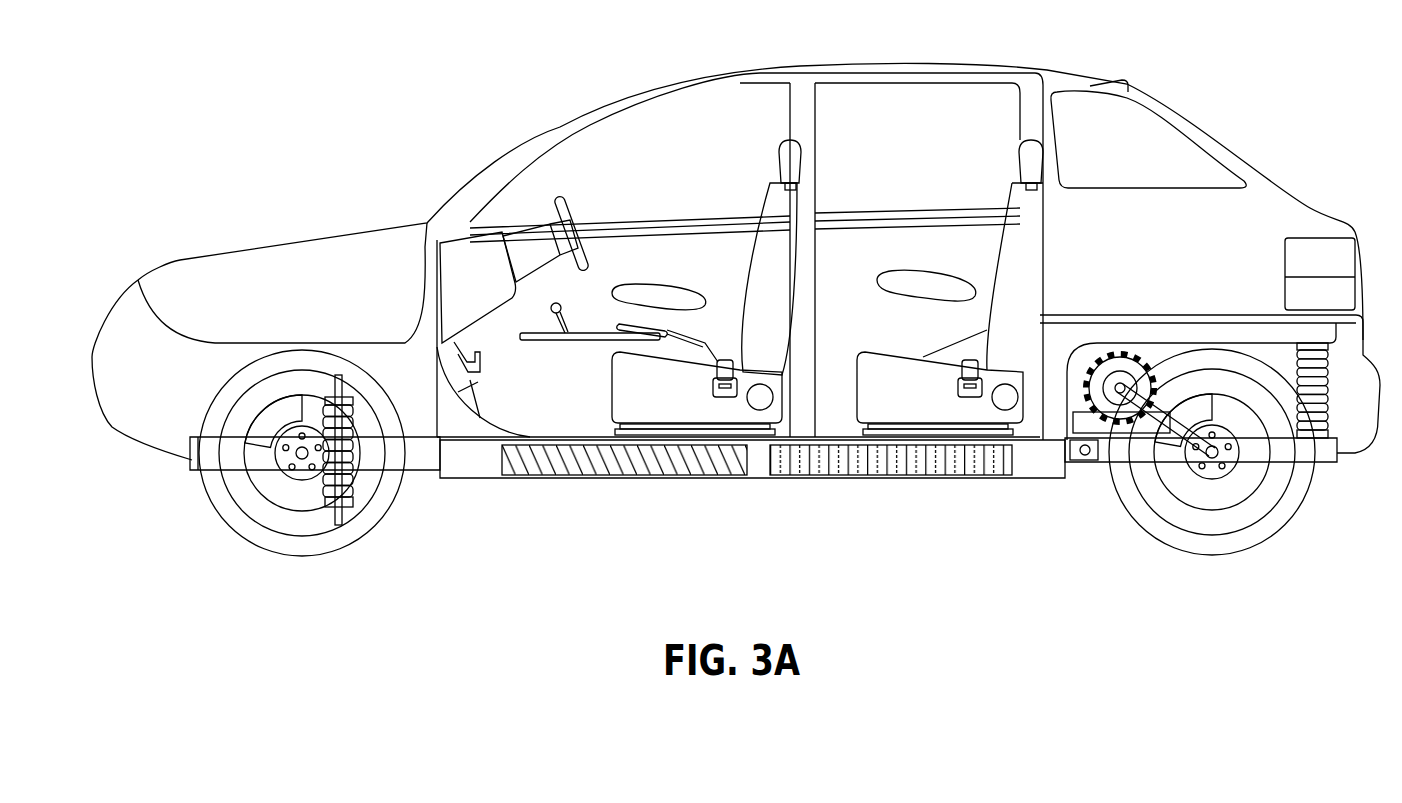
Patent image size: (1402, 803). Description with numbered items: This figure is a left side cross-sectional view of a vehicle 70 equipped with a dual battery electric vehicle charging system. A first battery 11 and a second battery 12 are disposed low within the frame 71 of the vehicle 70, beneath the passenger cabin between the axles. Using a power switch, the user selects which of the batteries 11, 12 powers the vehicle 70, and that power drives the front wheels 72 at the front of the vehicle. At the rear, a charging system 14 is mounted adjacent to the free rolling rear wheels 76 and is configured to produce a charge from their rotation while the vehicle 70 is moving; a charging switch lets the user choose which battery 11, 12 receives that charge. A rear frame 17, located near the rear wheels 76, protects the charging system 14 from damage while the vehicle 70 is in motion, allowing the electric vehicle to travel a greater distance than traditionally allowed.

The first battery 11 is at (578, 477).
The second battery 12 is at (833, 478).
The charging system 14 is at (1113, 357).
The rear frame 17 is at (1323, 453).
The vehicle 70 is at (530, 133).
The frame 71 is at (1260, 327).
The front wheels 72 is at (293, 548).
The rear wheels 76 is at (1218, 547).